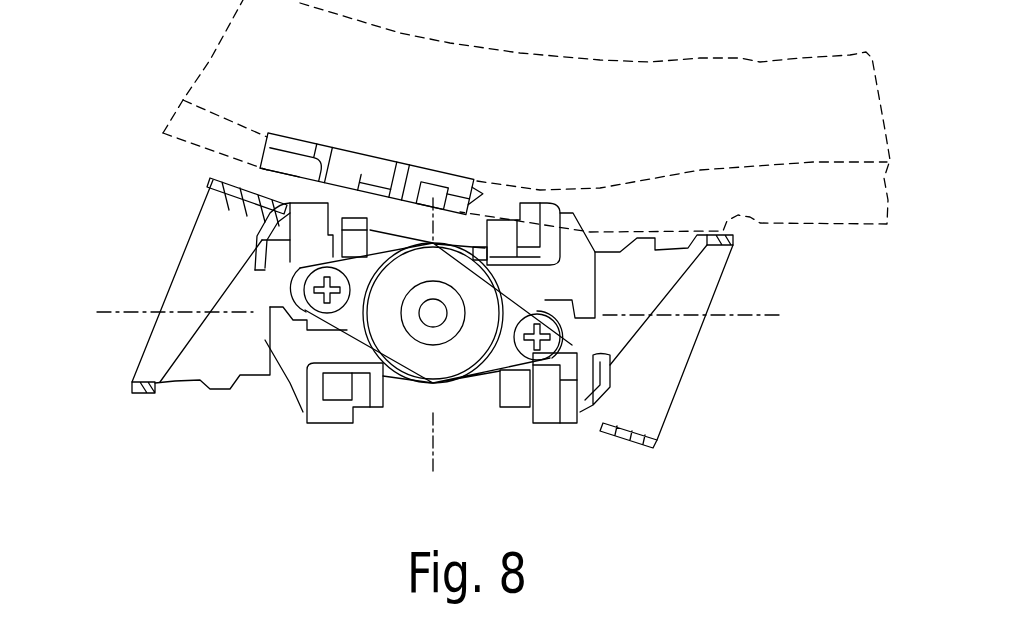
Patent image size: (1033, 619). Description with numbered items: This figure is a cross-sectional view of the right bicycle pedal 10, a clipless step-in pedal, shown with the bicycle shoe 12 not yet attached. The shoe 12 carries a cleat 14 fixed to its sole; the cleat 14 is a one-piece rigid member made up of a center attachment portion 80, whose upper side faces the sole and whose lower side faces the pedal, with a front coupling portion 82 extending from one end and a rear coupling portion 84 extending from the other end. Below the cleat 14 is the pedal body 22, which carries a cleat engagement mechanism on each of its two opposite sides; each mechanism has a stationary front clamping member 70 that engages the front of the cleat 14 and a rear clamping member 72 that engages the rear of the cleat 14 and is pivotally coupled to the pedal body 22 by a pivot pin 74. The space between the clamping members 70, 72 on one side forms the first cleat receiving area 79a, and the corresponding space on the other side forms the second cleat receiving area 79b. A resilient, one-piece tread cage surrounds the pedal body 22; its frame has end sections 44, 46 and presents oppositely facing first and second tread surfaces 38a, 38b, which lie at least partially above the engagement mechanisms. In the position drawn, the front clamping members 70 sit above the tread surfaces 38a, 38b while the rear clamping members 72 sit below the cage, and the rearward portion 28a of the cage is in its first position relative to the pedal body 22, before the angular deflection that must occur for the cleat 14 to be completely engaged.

The bicycle pedal 10 is at (125, 284).
The bicycle shoe 12 is at (765, 52).
The cleat 14 is at (370, 133).
The pedal body 22 is at (247, 357).
The rearward portion of the tread cage 28a is at (192, 173).
The first tread surface 38a is at (725, 232).
The second tread surface 38b is at (642, 447).
The end section 44 is at (722, 273).
The end section 46 is at (177, 260).
The front clamping member 70 is at (555, 203).
The rear clamping member 72 is at (255, 242).
The pivot pin 74 is at (330, 340).
The first cleat receiving area 79a is at (392, 206).
The second cleat receiving area 79b is at (407, 423).
The center attachment portion 80 is at (342, 155).
The front coupling portion 82 is at (485, 200).
The rear coupling portion 84 is at (267, 150).